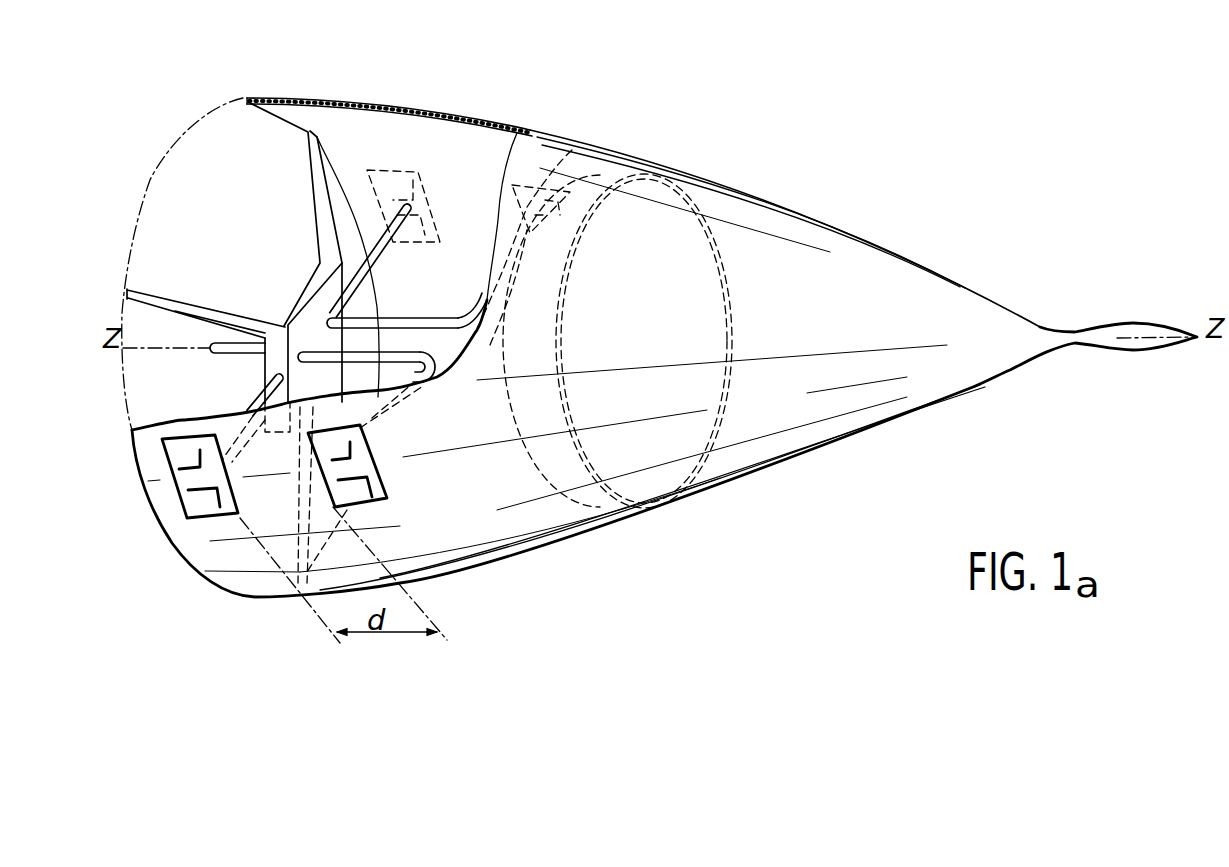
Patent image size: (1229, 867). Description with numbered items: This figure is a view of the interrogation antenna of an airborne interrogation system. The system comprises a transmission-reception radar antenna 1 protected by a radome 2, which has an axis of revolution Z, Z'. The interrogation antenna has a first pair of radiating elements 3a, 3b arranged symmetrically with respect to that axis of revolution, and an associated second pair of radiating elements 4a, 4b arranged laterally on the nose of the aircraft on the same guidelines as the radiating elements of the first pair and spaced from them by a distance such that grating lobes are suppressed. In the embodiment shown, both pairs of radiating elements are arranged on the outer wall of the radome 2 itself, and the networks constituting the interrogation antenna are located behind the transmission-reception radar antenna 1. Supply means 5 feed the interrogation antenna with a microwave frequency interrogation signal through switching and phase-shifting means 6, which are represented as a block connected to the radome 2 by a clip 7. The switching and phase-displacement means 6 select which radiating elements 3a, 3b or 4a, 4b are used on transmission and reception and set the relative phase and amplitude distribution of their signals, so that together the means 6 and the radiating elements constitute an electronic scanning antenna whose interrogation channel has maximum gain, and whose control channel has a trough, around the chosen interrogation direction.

The transmission-reception radar antenna 1 is at (713, 215).
The radome 2 is at (872, 242).
The radiating element 3a is at (362, 504).
The radiating element 3b is at (572, 150).
The radiating element 4a is at (200, 513).
The radiating element 4b is at (383, 167).
The supply means 5 is at (231, 349).
The switching and phase-shifting means 6 is at (358, 360).
The clip 7 is at (241, 330).